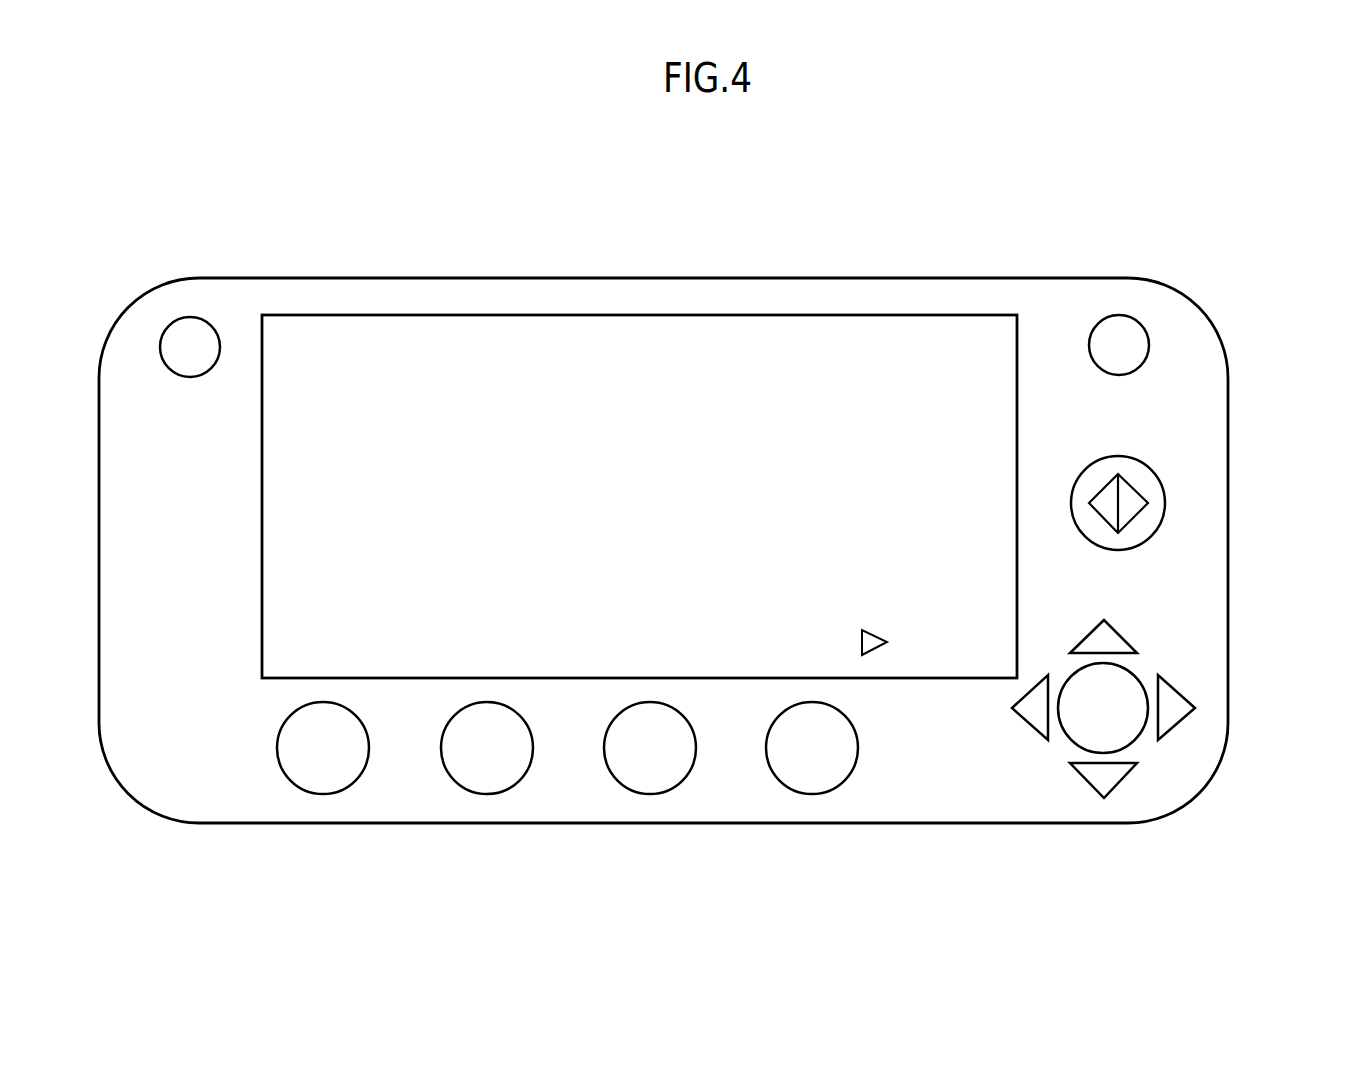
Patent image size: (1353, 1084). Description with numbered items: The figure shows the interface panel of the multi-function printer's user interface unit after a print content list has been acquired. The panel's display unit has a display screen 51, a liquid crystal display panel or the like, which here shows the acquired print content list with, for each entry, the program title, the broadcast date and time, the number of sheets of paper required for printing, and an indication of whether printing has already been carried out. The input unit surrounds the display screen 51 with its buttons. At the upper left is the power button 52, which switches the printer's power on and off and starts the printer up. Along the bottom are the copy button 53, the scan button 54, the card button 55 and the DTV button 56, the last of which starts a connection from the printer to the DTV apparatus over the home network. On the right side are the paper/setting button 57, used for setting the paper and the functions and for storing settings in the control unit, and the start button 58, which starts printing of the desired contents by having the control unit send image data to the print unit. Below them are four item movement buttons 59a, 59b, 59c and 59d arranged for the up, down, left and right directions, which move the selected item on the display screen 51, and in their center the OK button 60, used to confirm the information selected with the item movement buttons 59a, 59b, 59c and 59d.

The display screen 51 is at (393, 315).
The power button 52 is at (190, 317).
The copy button 53 is at (338, 795).
The scan button 54 is at (502, 795).
The card button 55 is at (663, 795).
The DTV button 56 is at (826, 795).
The paper/setting button 57 is at (1118, 315).
The start button 58 is at (1165, 499).
The item movement button 59a is at (1120, 632).
The item movement button 59b is at (1120, 776).
The item movement button 59c is at (1035, 733).
The item movement button 59d is at (1180, 726).
The OK button 60 is at (1065, 740).